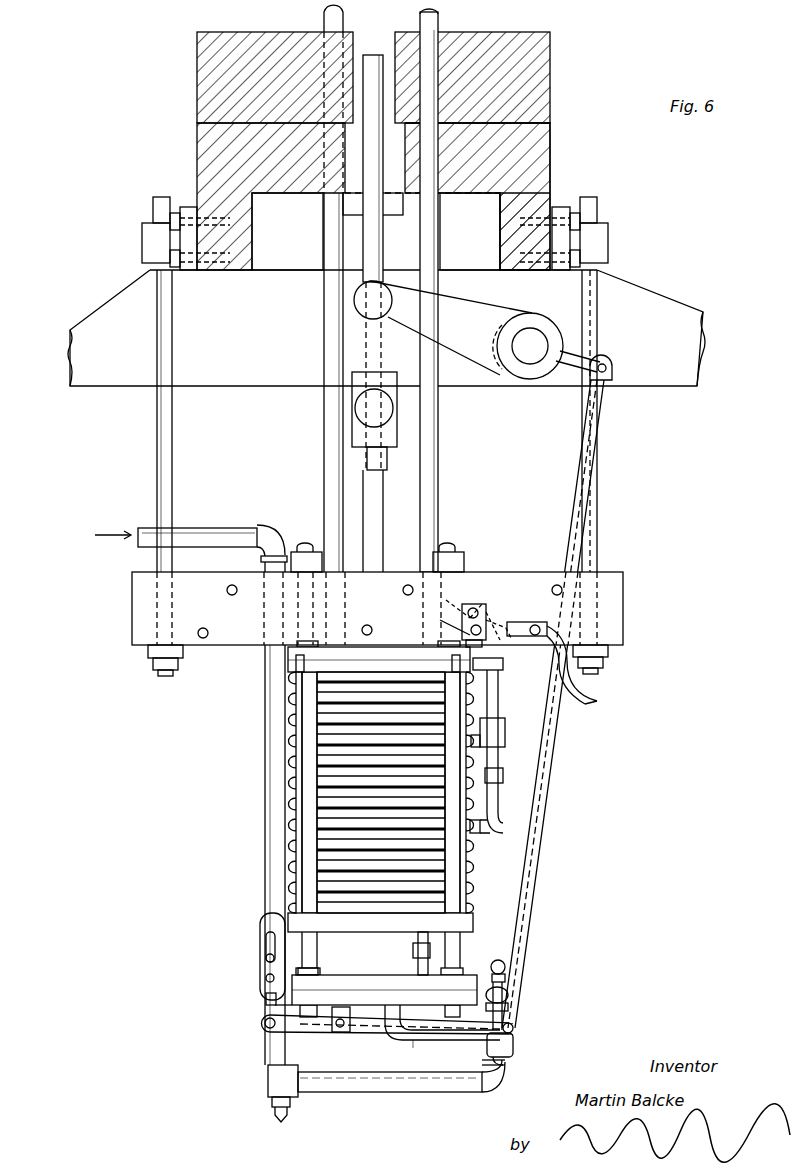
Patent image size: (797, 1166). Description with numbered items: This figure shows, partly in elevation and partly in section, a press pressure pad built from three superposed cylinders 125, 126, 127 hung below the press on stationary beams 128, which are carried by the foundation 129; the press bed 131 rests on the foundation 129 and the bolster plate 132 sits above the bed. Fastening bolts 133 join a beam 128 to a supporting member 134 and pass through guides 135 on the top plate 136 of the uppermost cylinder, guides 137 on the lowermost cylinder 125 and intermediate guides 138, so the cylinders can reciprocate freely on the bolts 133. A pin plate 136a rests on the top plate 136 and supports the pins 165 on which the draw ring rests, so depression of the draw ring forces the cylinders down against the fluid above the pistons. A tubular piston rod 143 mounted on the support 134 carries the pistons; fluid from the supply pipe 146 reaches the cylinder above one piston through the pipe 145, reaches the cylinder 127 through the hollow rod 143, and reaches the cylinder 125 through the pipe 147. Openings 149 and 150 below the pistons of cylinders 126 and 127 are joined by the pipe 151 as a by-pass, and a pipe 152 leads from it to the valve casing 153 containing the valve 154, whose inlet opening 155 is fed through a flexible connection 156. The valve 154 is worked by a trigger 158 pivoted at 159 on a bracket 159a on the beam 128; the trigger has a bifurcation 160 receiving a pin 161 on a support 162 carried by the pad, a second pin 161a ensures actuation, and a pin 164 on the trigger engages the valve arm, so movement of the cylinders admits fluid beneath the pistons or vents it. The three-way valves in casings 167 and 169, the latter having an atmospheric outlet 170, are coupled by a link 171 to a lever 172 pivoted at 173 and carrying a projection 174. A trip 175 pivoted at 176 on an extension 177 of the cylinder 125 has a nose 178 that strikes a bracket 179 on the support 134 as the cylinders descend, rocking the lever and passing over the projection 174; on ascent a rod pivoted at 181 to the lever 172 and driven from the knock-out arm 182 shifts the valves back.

The lowermost cylinder 125 is at (290, 877).
The cylinder 126 is at (290, 797).
The cylinder 127 is at (290, 718).
The stationary beam 128 is at (145, 605).
The foundation 129 is at (109, 378).
The press bed 131 is at (197, 156).
The bolster plate 132 is at (196, 77).
The fastening rod or bolt 133 is at (304, 546).
The supporting member 134 is at (336, 985).
The guide or ear 135 is at (452, 652).
The top plate 136 is at (358, 660).
The pin plate 136a is at (290, 656).
The guide or ear 137 is at (318, 923).
The intermediate guide 138 is at (290, 758).
The tubular piston rod 143 is at (370, 971).
The pipe 145 is at (396, 1048).
The fluid supply pipe 146 is at (214, 530).
The pipe 147 is at (430, 962).
The opening 149 is at (482, 832).
The opening 150 is at (498, 740).
The pipe 151 is at (499, 795).
The pipe 152 is at (497, 702).
The valve casing 153 is at (498, 622).
The valve 154 is at (490, 612).
The opening 155 is at (520, 625).
The flexible connection 156 is at (575, 698).
The trigger 158 is at (474, 608).
The pivot 159 is at (470, 628).
The bracket 159a is at (485, 602).
The bifurcation 160 is at (538, 848).
The pin 161 is at (440, 620).
The second pin 161a is at (448, 598).
The support 162 is at (432, 584).
The pin or projection 164 is at (488, 642).
The pin 165 is at (430, 520).
The valve casing 167 is at (500, 1075).
The valve casing 169 is at (510, 993).
The outlet 170 is at (492, 986).
The link 171 is at (515, 1041).
The lever 172 is at (362, 1034).
The pivot 173 is at (335, 1028).
The projection 174 is at (268, 1027).
The trip 175 is at (265, 996).
The pivot 176 is at (262, 976).
The extension or arm 177 is at (262, 922).
The nose or projection 178 is at (292, 976).
The bracket or projection 179 is at (280, 1006).
The pivotal connection 181 is at (514, 1026).
The knock out operating arm 182 is at (492, 355).